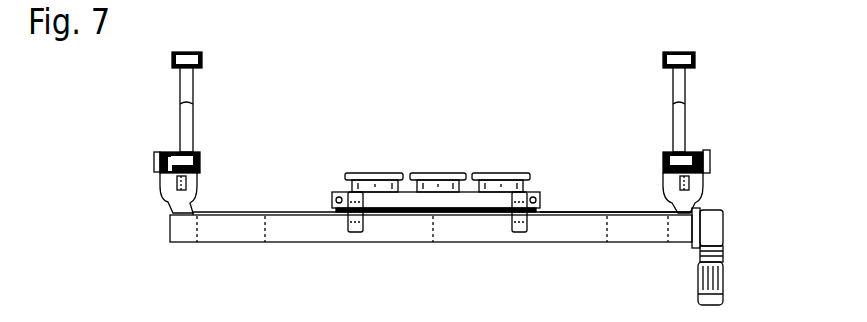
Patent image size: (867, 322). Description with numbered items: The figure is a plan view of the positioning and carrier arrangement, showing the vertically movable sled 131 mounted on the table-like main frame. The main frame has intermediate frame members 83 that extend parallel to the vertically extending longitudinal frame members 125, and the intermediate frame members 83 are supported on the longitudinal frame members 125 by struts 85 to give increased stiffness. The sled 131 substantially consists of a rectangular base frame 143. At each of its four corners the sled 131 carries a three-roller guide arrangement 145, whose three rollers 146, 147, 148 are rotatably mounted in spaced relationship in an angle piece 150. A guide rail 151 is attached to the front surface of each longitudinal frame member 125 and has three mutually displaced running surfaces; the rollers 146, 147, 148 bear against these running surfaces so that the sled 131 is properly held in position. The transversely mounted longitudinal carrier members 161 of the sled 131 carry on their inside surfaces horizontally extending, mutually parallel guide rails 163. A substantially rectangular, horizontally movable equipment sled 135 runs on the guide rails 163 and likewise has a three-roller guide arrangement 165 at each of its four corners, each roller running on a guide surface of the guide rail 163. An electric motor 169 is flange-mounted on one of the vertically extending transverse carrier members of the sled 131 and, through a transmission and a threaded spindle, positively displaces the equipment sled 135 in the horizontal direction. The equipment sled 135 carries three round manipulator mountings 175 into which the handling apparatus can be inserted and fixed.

The intermediate frame member 83 is at (202, 60).
The strut 85 is at (186, 90).
The longitudinal frame member 125 is at (199, 152).
The vertically movable sled 131 is at (443, 246).
The equipment sled 135 is at (380, 166).
The base frame 143 is at (238, 246).
The three-roller guide arrangement 145 is at (146, 155).
The guide roller 146 is at (199, 170).
The guide roller 147 is at (188, 190).
The guide roller 148 is at (166, 152).
The angle piece 150 is at (160, 190).
The guide rail 151 is at (162, 172).
The longitudinal carrier member 161 is at (583, 243).
The guide rail 163 is at (566, 212).
The three-roller guide arrangement 165 is at (353, 236).
The electric motor 169 is at (724, 282).
The manipulator mounting 175 is at (472, 174).